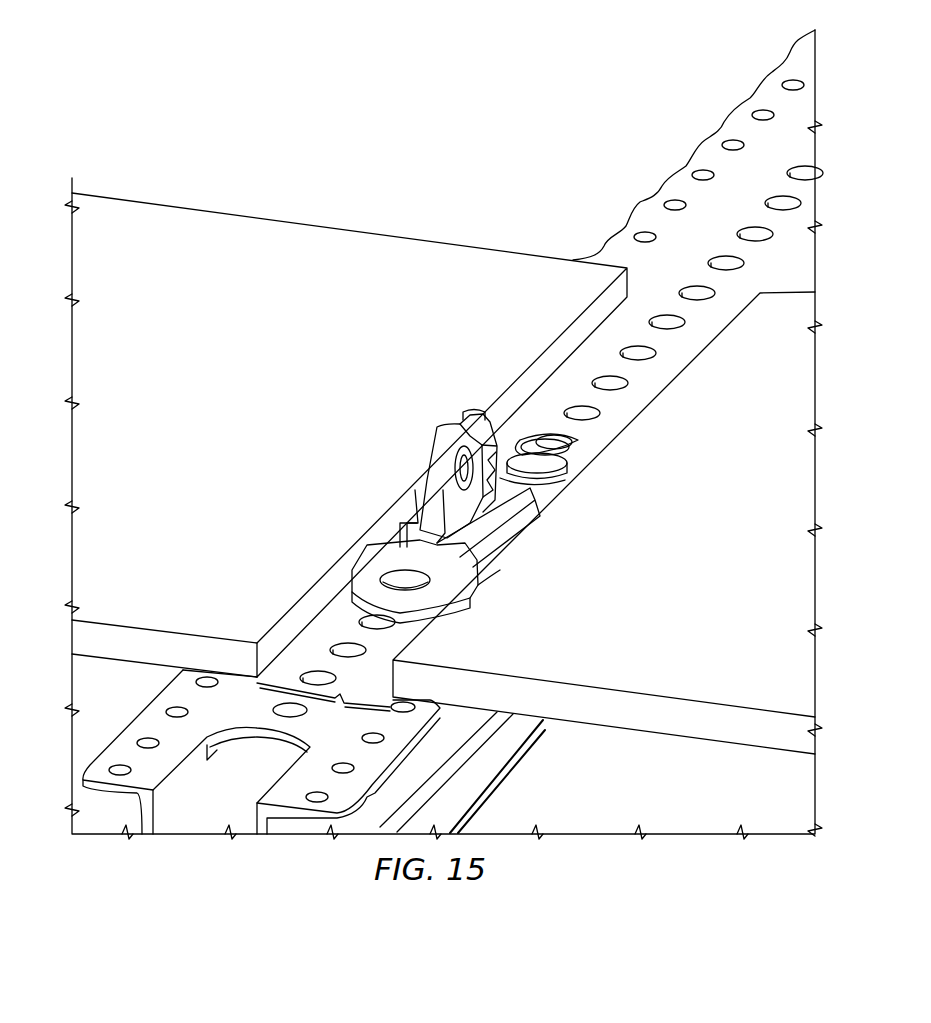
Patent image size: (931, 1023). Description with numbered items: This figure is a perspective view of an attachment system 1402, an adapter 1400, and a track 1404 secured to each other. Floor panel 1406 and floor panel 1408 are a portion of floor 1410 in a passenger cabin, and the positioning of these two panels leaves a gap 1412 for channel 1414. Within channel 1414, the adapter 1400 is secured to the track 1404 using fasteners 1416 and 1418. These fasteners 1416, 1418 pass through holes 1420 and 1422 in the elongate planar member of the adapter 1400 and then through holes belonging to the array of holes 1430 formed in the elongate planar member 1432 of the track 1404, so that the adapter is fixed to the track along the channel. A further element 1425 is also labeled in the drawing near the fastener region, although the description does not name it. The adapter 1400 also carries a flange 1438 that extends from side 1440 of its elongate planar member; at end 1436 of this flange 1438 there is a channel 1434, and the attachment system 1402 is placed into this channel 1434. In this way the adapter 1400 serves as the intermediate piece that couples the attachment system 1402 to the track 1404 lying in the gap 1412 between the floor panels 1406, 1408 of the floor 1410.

The adapter 1400 is at (582, 445).
The attachment system 1402 is at (437, 443).
The track 1404 is at (707, 131).
The floor panel 1406 is at (274, 420).
The floor panel 1408 is at (718, 533).
The floor 1410 is at (280, 214).
The gap 1412 is at (314, 752).
The channel 1414 is at (640, 306).
The fastener 1416 is at (425, 572).
The fastener 1418 is at (533, 467).
The hole 1420 is at (402, 572).
The hole 1422 is at (510, 448).
The flange 1425 is at (540, 487).
The array of holes 1430 is at (745, 216).
The elongate planar member 1432 is at (683, 187).
The channel 1434 is at (427, 627).
The end 1436 is at (463, 588).
The flange 1438 is at (500, 512).
The side 1440 is at (560, 475).